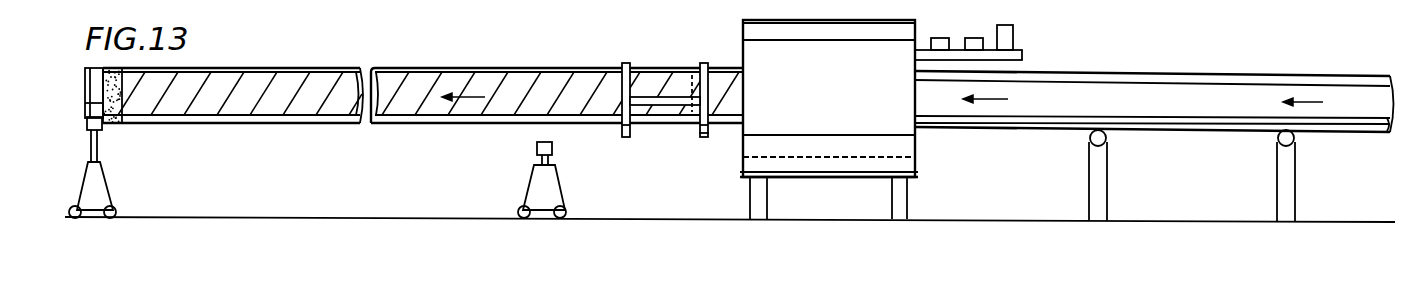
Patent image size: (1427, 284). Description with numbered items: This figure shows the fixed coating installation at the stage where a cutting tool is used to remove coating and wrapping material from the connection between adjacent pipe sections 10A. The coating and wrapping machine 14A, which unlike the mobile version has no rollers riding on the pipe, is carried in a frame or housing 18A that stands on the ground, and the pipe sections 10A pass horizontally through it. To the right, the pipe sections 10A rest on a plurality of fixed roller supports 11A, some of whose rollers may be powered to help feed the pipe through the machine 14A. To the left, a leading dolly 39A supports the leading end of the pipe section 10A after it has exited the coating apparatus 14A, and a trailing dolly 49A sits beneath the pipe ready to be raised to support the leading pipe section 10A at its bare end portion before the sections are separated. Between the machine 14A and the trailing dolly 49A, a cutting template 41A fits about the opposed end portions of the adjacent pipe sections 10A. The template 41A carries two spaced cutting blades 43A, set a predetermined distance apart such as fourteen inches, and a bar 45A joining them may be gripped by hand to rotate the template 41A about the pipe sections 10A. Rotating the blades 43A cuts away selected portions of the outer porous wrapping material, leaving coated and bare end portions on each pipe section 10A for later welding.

The pipe section 10A is at (338, 68).
The fixed roller support 11A is at (1108, 191).
The coating and wrapping machine 14A is at (925, 27).
The housing 18A is at (895, 150).
The leading dolly 39A is at (112, 187).
The cutting template 41A is at (697, 134).
The cutting blade 43A is at (625, 62).
The bar 45A is at (650, 99).
The trailing dolly 49A is at (531, 190).